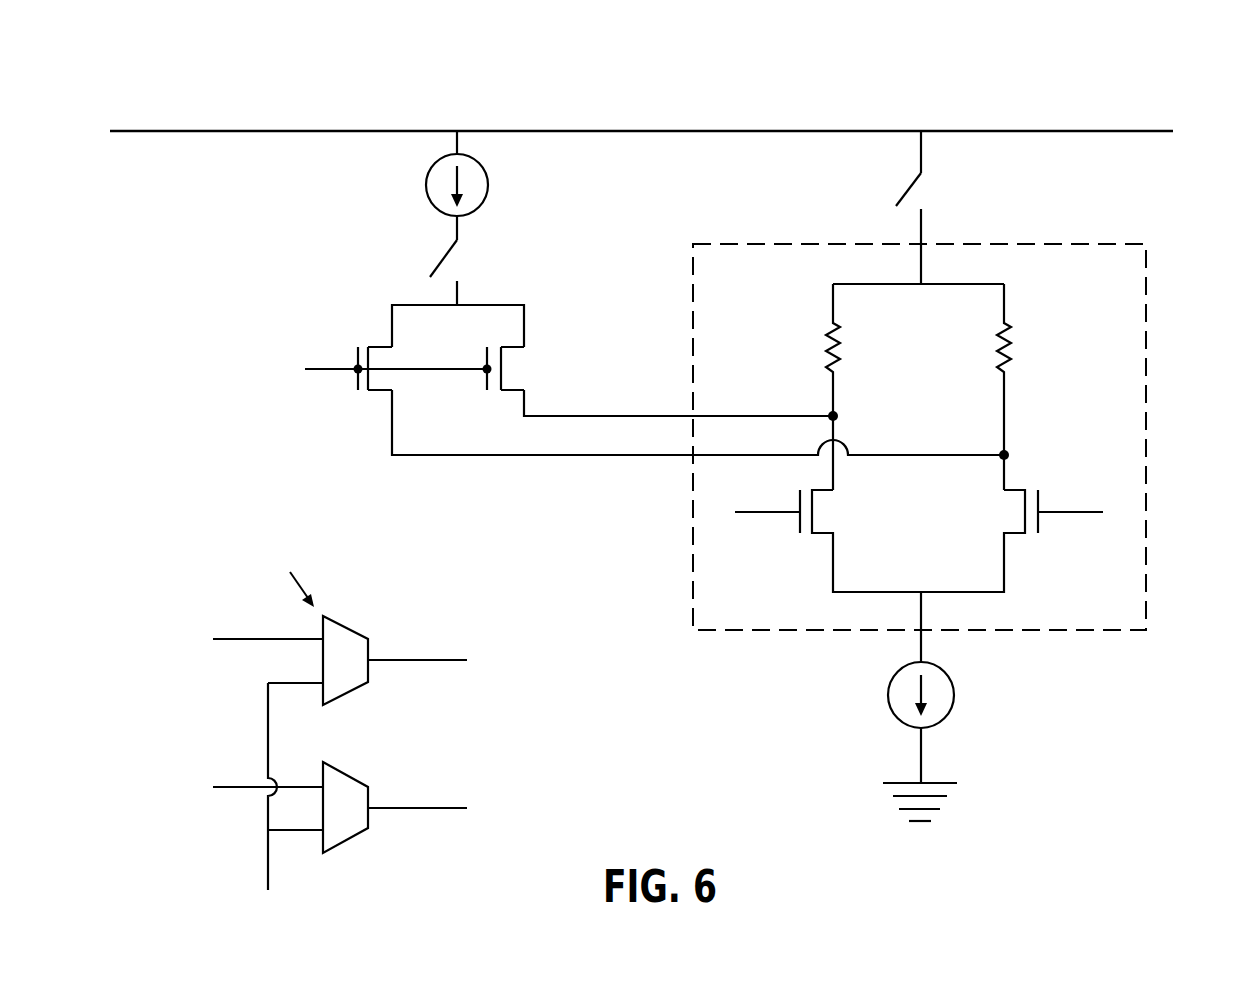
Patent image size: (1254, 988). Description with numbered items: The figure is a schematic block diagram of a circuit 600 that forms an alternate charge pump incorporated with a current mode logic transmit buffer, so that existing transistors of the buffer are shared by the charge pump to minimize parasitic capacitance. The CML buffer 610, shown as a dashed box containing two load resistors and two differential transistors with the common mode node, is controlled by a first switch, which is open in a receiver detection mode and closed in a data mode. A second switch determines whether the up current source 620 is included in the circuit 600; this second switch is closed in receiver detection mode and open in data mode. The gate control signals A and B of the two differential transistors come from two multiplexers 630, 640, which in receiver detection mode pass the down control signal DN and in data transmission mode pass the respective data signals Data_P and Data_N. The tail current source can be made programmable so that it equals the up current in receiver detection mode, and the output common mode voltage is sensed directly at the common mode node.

The circuit 600 is at (1054, 69).
The CML buffer 610 is at (796, 243).
The up current source 620 is at (425, 185).
The multiplexer 630 is at (354, 630).
The multiplexer 640 is at (354, 775).